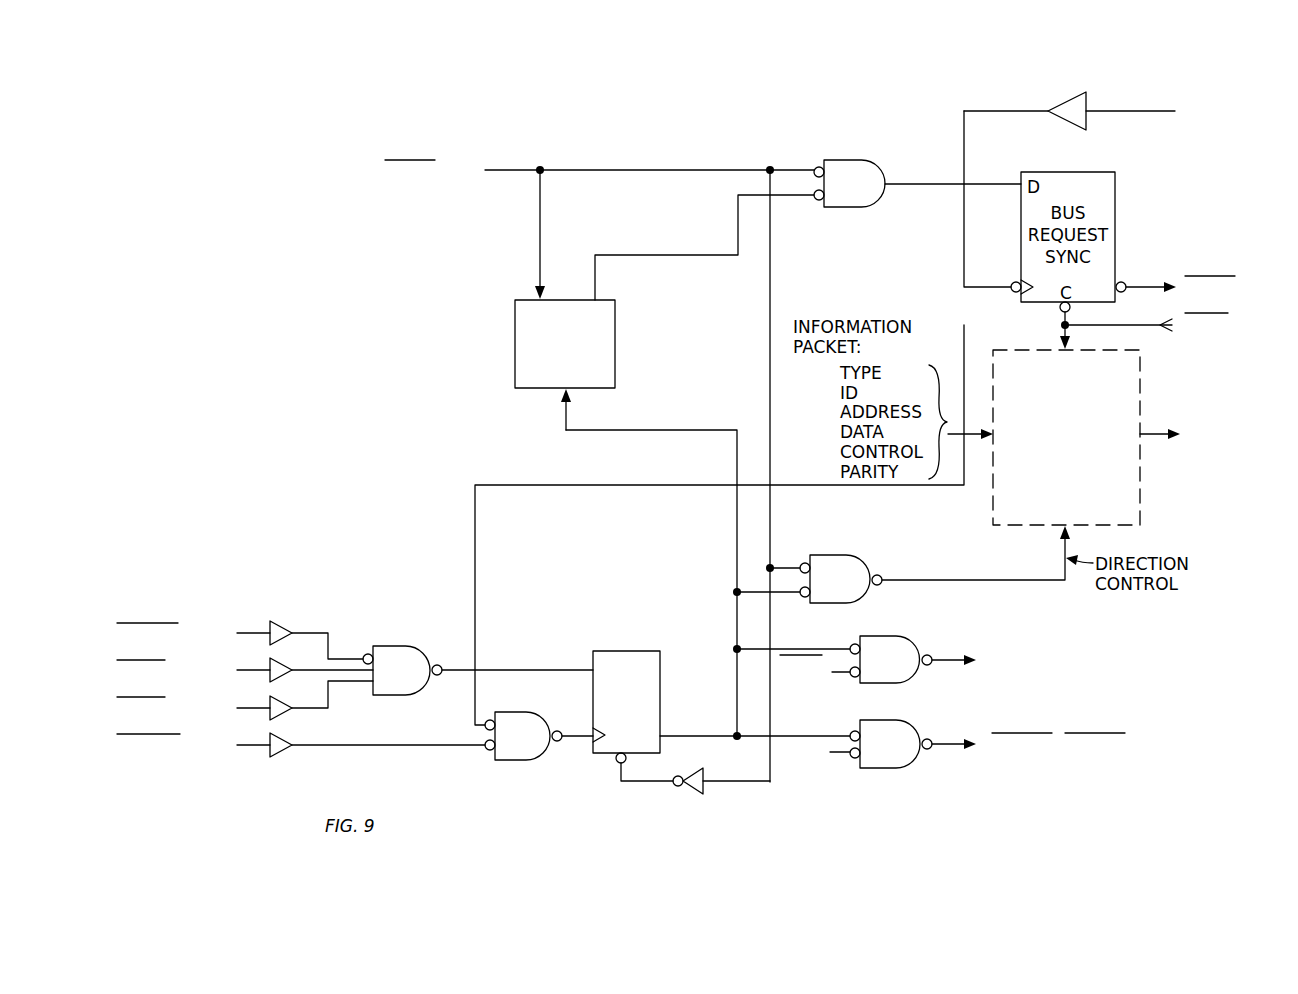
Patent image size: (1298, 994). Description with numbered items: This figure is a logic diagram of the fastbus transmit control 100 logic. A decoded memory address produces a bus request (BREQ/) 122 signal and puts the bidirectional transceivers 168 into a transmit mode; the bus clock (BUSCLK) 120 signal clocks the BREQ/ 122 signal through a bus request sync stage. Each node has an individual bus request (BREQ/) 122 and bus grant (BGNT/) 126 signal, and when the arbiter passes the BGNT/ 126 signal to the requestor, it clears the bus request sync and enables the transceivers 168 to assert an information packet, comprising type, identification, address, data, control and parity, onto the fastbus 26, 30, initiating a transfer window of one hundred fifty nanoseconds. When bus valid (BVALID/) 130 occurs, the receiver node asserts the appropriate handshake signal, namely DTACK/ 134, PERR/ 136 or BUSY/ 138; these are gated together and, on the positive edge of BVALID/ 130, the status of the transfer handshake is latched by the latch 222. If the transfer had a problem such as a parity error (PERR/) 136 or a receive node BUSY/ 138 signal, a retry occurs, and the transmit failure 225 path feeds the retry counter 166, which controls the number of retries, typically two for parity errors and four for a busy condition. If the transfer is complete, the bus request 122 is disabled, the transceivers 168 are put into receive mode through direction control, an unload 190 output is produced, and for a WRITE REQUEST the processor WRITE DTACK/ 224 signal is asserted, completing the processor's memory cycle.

The fastbus transmit control logic 100 is at (333, 285).
The bus clock (BUSCLK) signal 120 is at (1129, 193).
The bus request (BREQ/) signal 122 is at (828, 229).
The retry counter 166 is at (616, 380).
The transmit failure signal 225 is at (565, 412).
The bus grant (BGNT/) signal 126 is at (1024, 500).
The bidirectional transceivers 168 is at (1066, 437).
The fastbus 26 is at (1200, 446).
The fastbus 30 is at (1200, 446).
The DTACK/ handshake signal 134 is at (240, 640).
The PERR/ parity error signal 136 is at (245, 670).
The BUSY/ signal 138 is at (245, 700).
The bus valid (BVALID/) signal 130 is at (301, 745).
The latch 222 is at (662, 668).
The UNLOAD signal 190 is at (920, 659).
The WRITE DTACK/ signal 224 is at (913, 744).